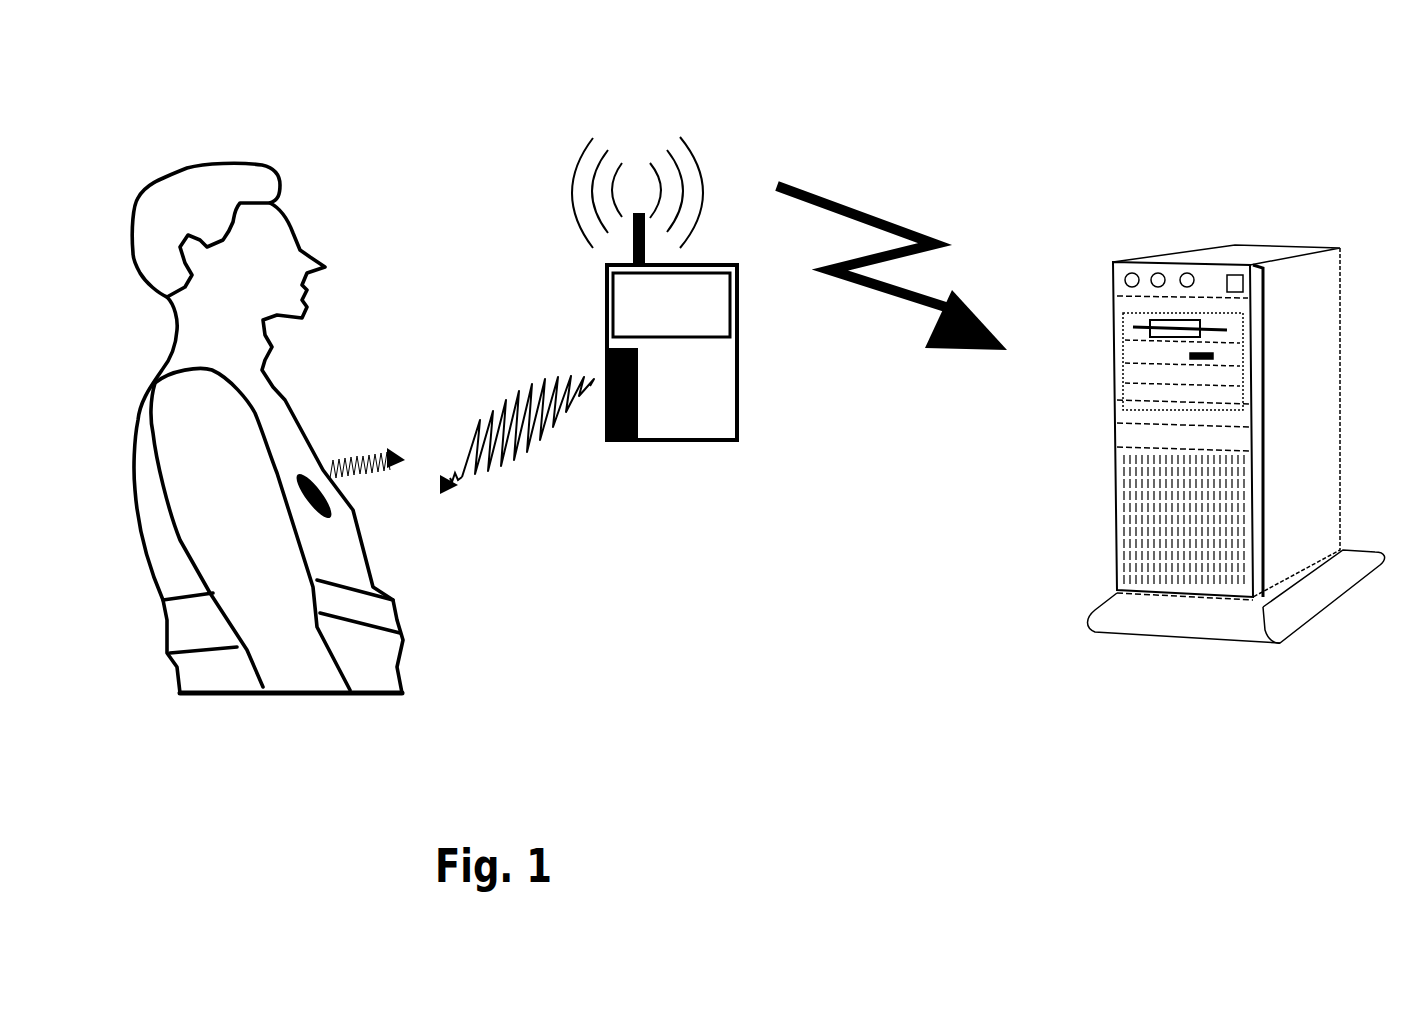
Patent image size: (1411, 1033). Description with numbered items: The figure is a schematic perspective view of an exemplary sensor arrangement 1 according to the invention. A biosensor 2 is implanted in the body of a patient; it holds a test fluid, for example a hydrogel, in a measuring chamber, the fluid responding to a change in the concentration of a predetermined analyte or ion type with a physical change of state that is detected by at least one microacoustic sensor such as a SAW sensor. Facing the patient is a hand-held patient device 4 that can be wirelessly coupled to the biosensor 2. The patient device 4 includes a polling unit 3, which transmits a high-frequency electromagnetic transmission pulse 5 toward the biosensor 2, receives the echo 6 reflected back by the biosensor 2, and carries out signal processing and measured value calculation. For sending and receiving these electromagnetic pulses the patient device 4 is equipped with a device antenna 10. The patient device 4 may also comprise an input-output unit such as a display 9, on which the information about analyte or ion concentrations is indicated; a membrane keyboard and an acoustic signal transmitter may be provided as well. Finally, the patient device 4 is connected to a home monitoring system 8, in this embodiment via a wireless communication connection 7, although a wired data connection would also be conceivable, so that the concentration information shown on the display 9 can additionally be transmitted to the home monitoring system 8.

The sensor arrangement 1 is at (1006, 150).
The biosensor 2 is at (333, 517).
The polling unit 3 is at (620, 442).
The patient device 4 is at (713, 443).
The transmission pulse 5 is at (523, 470).
The echo 6 is at (360, 447).
The communication connection 7 is at (823, 197).
The home monitoring system 8 is at (1117, 553).
The display 9 is at (713, 312).
The device antenna 10 is at (635, 243).